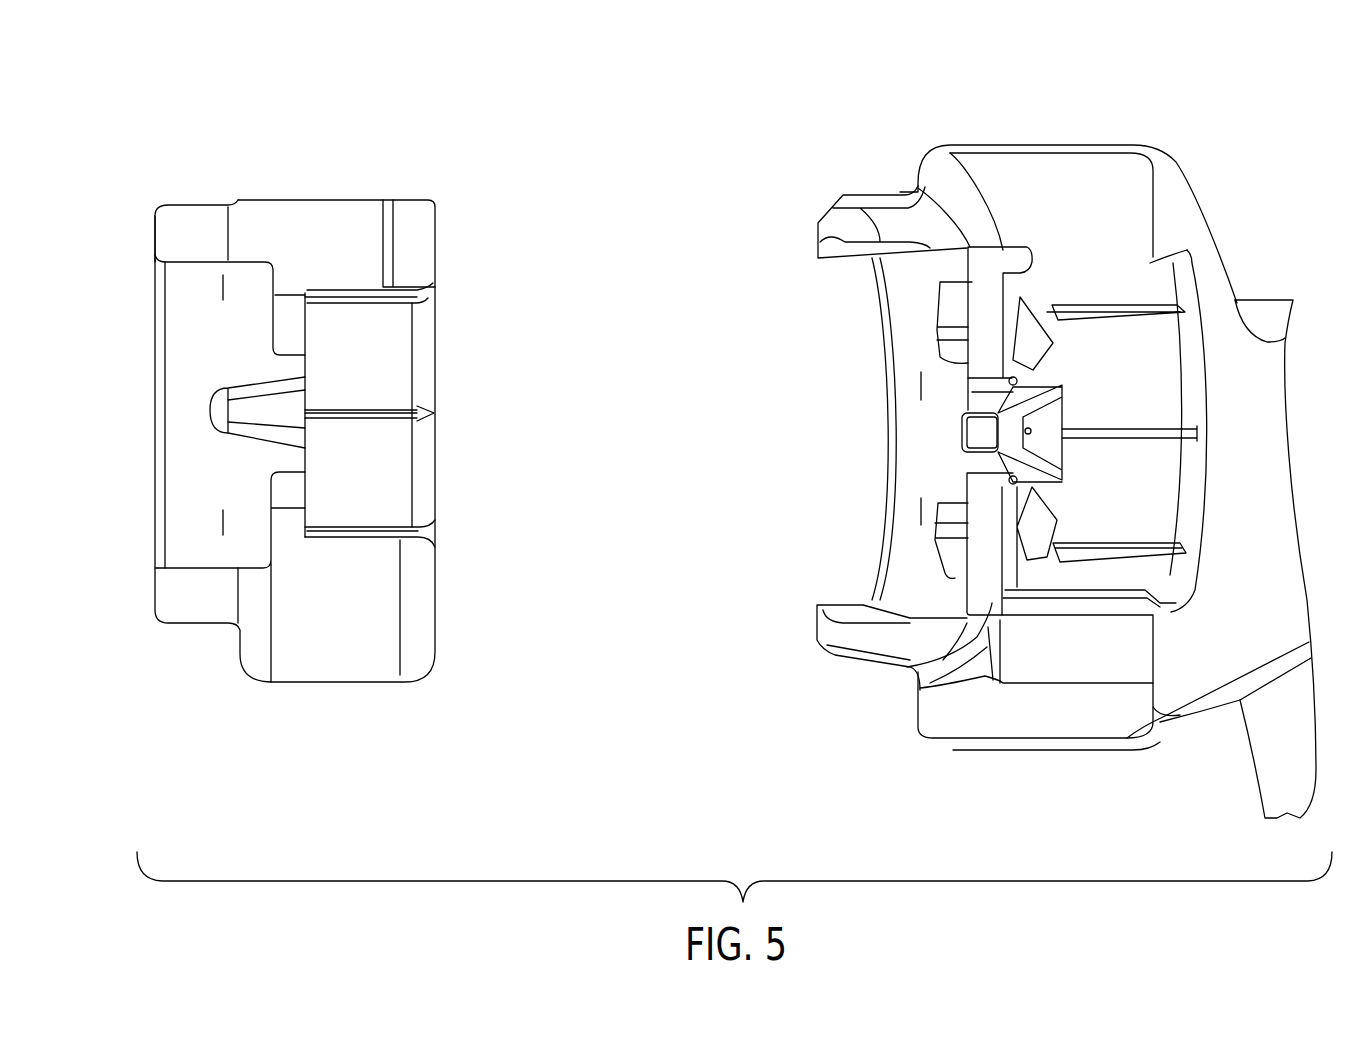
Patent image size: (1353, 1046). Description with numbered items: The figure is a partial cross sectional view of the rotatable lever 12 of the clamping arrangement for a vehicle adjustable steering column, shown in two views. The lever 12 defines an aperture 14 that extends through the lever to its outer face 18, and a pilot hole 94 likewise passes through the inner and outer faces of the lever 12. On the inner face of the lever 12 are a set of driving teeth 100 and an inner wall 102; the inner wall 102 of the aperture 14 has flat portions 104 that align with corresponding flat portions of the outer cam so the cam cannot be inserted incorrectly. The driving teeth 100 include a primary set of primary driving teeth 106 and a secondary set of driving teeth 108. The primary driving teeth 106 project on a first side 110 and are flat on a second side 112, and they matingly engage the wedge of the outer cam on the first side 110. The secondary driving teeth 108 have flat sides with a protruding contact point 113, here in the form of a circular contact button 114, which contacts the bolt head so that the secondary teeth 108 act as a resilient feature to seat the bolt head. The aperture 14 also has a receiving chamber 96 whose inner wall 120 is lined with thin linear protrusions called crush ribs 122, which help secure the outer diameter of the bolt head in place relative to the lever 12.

The rotatable lever 12 is at (308, 146).
The aperture 14 is at (118, 320).
The outer face 18 is at (1268, 540).
The pilot hole 94 is at (318, 390).
The receiving chamber 96 is at (470, 488).
The driving teeth 100 is at (256, 340).
The inner wall 102 is at (178, 505).
The flat portions 104 is at (222, 288).
The primary driving teeth 106 is at (300, 425).
The secondary driving teeth 108 is at (292, 305).
The first side 110 is at (208, 437).
The second side 112 is at (322, 447).
The contact point 113 is at (1028, 382).
The contact button 114 is at (1015, 372).
The inner wall 120 is at (405, 395).
The crush ribs 122 is at (420, 298).